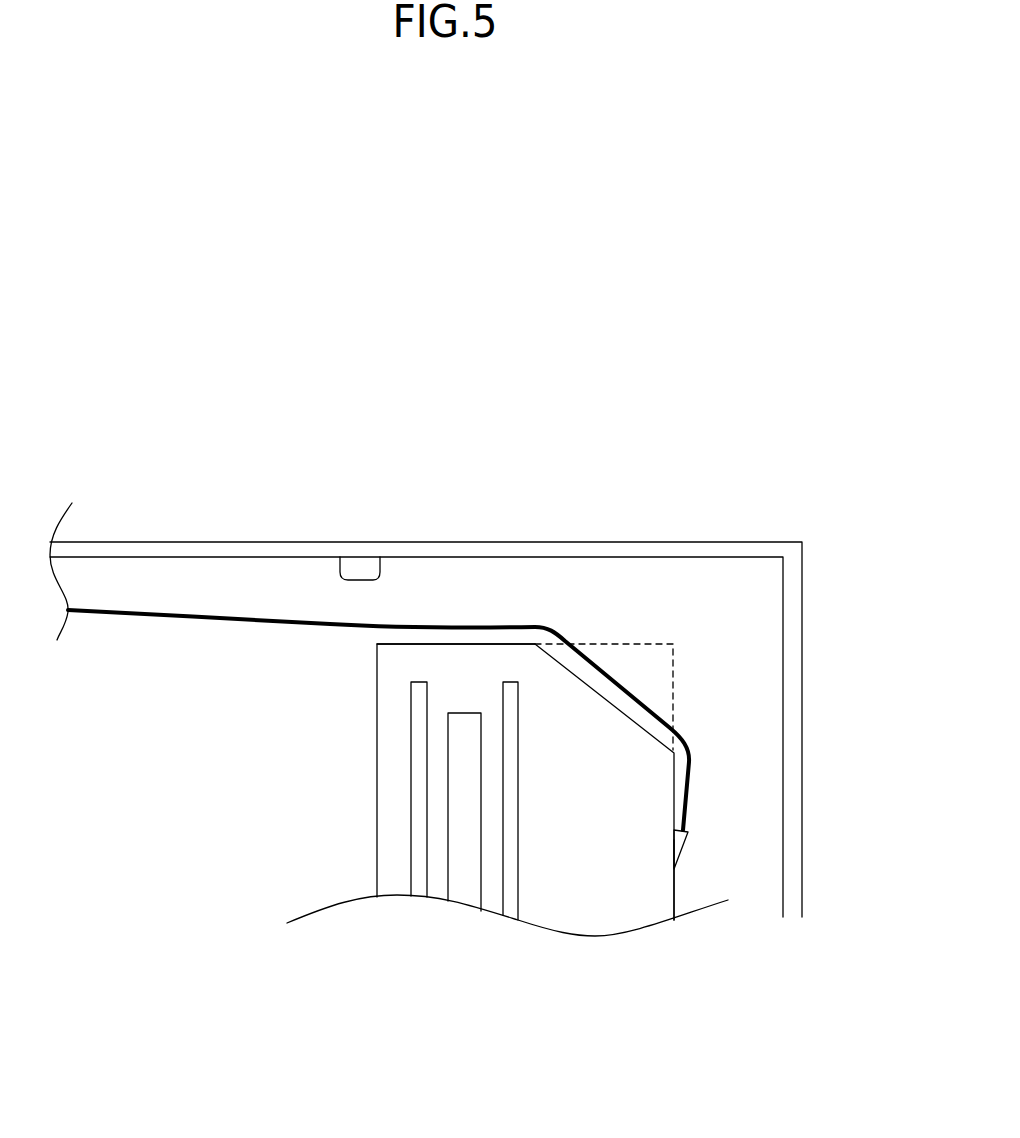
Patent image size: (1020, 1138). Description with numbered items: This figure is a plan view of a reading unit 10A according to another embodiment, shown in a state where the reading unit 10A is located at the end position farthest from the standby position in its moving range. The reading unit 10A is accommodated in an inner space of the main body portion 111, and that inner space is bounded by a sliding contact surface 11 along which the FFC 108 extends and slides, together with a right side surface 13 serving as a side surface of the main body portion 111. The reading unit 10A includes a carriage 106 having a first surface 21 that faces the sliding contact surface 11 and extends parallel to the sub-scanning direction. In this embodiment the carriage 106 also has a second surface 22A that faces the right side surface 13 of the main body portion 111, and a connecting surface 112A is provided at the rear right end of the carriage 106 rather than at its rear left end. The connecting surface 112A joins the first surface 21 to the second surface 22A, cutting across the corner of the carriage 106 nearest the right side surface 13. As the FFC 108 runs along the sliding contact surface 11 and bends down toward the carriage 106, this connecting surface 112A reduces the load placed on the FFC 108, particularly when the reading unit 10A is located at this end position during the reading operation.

The main body portion 111 is at (167, 542).
The FFC 108 is at (285, 618).
The sliding contact surface 11 is at (380, 567).
The reading unit 10A is at (434, 642).
The carriage 106 is at (468, 663).
The first surface 21 is at (512, 643).
The connecting surface 112A is at (596, 650).
The right side surface 13 is at (782, 712).
The second surface 22A is at (672, 888).